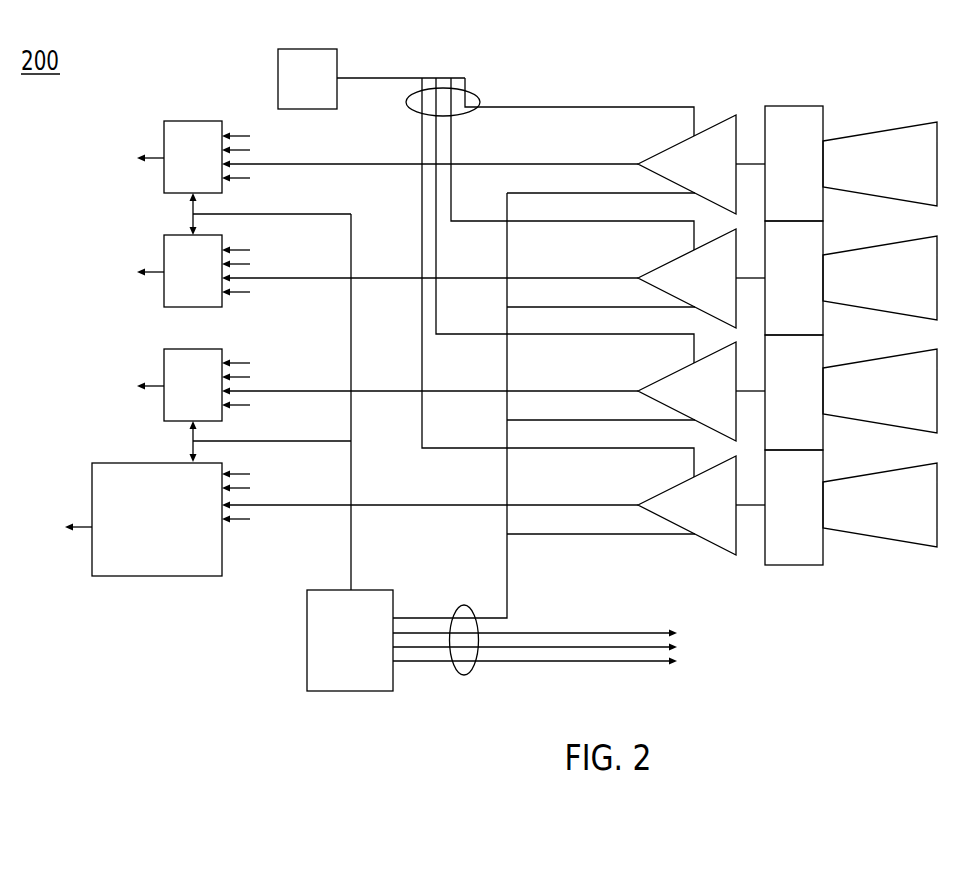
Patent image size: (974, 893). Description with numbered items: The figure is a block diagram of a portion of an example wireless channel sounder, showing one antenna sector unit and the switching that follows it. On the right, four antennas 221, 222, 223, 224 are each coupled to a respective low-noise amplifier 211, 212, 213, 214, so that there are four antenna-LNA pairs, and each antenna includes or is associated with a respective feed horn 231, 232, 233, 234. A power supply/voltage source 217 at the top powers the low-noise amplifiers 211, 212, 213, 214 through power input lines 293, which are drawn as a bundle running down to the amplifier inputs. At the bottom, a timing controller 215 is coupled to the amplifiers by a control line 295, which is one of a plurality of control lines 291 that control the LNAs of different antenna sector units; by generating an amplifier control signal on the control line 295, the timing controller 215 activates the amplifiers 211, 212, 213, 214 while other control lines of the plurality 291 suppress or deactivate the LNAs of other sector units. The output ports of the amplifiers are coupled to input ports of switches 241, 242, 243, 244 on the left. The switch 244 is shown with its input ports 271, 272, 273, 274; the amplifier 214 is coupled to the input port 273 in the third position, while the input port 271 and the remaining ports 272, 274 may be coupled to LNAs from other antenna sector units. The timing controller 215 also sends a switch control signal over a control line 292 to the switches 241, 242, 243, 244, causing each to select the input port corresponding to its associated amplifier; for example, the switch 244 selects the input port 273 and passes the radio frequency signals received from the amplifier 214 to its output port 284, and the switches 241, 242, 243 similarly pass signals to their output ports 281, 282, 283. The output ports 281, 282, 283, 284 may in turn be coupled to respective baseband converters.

The low-noise amplifier 211 is at (689, 175).
The low-noise amplifier 212 is at (689, 289).
The low-noise amplifier 213 is at (689, 402).
The low-noise amplifier 214 is at (689, 516).
The timing controller 215 is at (336, 651).
The power supply/voltage source 217 is at (293, 90).
The antenna 221 is at (780, 175).
The antenna 222 is at (780, 289).
The antenna 223 is at (780, 402).
The antenna 224 is at (780, 516).
The feed horn 231 is at (866, 175).
The feed horn 232 is at (866, 289).
The feed horn 233 is at (866, 402).
The feed horn 234 is at (866, 516).
The switch 241 is at (179, 168).
The switch 242 is at (179, 282).
The switch 243 is at (179, 395).
The switch 244 is at (143, 573).
The input port 271 is at (219, 474).
The input port 272 is at (219, 489).
The input port 273 is at (219, 506).
The input port 274 is at (219, 520).
The output port 281 is at (151, 158).
The output port 282 is at (151, 272).
The output port 283 is at (151, 386).
The output port 284 is at (95, 527).
The plurality of control lines 291 is at (464, 676).
The control line 292 is at (350, 547).
The power input lines 293 is at (480, 101).
The control line 295 is at (507, 592).